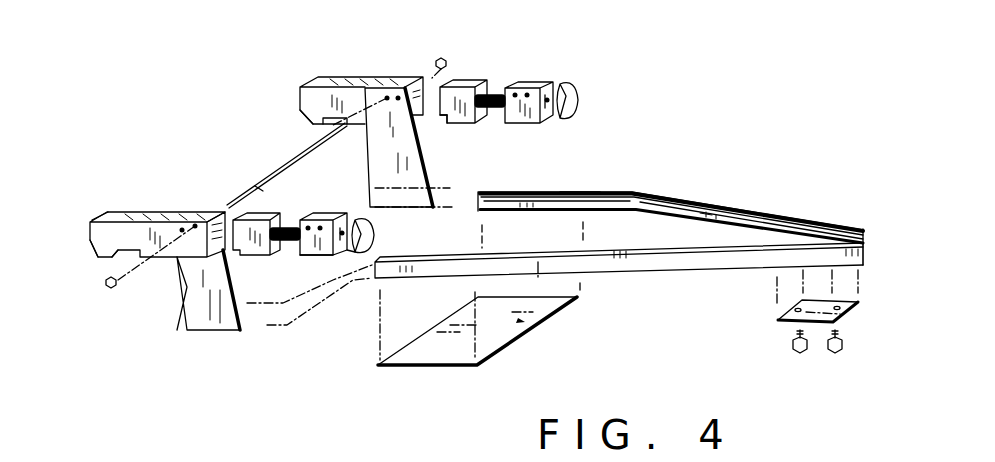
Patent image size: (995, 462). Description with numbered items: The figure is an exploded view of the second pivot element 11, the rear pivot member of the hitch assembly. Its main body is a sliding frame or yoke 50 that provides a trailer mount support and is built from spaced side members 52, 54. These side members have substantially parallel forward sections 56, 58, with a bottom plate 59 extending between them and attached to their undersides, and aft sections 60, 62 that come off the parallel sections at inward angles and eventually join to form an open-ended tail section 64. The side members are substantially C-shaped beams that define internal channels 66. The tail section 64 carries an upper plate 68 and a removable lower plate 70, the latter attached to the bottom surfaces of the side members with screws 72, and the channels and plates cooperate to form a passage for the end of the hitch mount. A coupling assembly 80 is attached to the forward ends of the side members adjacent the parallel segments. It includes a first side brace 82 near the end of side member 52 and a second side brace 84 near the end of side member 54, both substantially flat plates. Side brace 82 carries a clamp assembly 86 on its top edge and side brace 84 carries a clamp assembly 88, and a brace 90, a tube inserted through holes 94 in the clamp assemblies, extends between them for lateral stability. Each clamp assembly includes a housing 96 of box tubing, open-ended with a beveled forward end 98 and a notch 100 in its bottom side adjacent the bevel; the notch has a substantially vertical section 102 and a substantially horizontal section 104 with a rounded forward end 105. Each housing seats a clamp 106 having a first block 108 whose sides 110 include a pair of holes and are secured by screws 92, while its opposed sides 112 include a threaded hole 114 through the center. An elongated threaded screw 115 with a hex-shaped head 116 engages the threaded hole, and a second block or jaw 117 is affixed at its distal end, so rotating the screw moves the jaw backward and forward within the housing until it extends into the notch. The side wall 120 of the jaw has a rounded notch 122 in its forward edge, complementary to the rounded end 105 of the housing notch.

The second pivot element 11 is at (594, 186).
The sliding frame or yoke 50 is at (768, 202).
The side member 52 is at (655, 192).
The side member 54 is at (639, 275).
The forward section 56 is at (512, 195).
The forward section 58 is at (445, 275).
The bottom plate 59 is at (552, 318).
The aft section 60 is at (864, 228).
The aft section 62 is at (722, 264).
The tail section 64 is at (866, 232).
The internal channels 66 is at (618, 197).
The upper plate 68 is at (812, 215).
The removable lower plate 70 is at (823, 310).
The screws 72 is at (804, 352).
The coupling assembly 80 is at (363, 70).
The first side brace 82 is at (407, 170).
The second side brace 84 is at (173, 330).
The clamp assembly 86 is at (455, 72).
The clamp assembly 88 is at (210, 210).
The brace 90 is at (262, 173).
The screws 92 is at (440, 58).
The holes 94 is at (387, 96).
The housing 96 is at (100, 212).
The beveled forward end 98 is at (97, 253).
The notch 100 is at (110, 235).
The vertical section 102 is at (343, 127).
The horizontal section 104 is at (333, 118).
The rounded forward end 105 is at (325, 118).
The clamp 106 is at (498, 88).
The first block 108 is at (322, 262).
The sides 110 is at (322, 230).
The opposed sides 112 is at (350, 253).
The threaded hole 114 is at (547, 82).
The threaded screw 115 is at (548, 105).
The hex-shaped head 116 is at (573, 100).
The jaw 117 is at (497, 92).
The side wall 120 is at (473, 125).
The rounded notch 122 is at (440, 116).